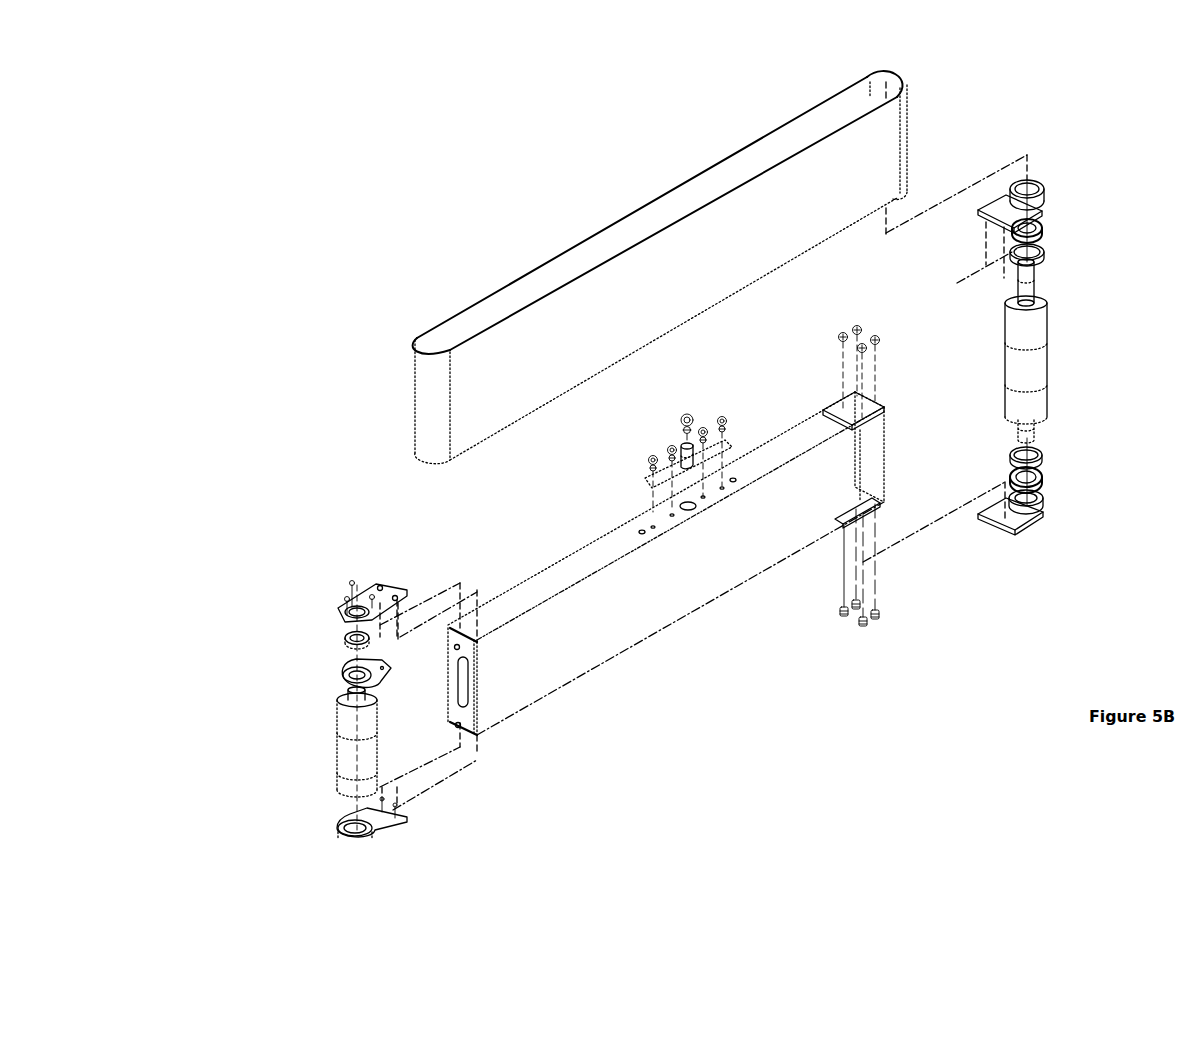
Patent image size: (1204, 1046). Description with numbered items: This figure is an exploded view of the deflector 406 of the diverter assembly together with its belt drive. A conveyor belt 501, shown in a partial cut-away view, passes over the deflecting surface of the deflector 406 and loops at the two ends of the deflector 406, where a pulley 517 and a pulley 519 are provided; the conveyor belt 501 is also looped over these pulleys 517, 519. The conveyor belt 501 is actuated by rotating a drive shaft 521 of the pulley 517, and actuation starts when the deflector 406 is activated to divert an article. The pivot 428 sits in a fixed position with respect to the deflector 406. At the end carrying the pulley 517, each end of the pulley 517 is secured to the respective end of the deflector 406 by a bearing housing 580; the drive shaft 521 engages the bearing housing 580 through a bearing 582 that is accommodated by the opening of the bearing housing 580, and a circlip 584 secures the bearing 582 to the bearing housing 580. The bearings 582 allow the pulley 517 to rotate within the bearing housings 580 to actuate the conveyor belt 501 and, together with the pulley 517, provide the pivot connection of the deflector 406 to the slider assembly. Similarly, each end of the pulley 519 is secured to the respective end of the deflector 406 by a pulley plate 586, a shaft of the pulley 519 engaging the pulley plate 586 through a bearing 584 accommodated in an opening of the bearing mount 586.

The conveyor belt 501 is at (452, 333).
The deflector 406 is at (727, 565).
The pivot 428 is at (690, 467).
The bearing housing 580 is at (1047, 190).
The bearing 582 is at (1030, 232).
The circlip 584 is at (1045, 258).
The drive shaft 521 is at (1035, 283).
The pulley 517 is at (1035, 367).
The pulley 519 is at (352, 753).
The pulley plate 586 is at (342, 617).